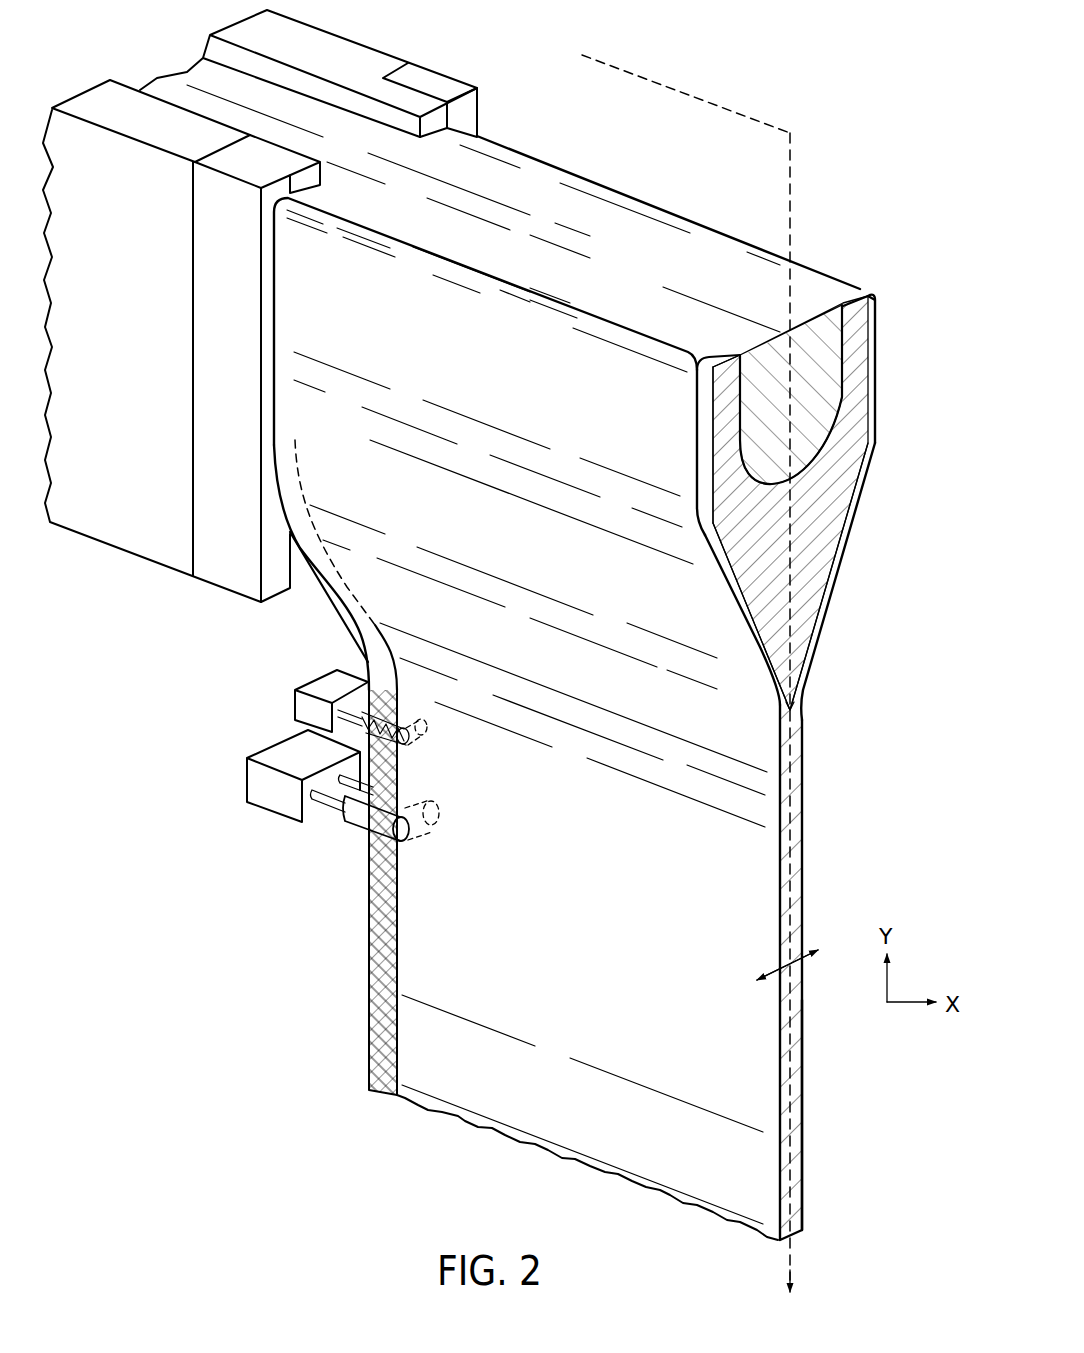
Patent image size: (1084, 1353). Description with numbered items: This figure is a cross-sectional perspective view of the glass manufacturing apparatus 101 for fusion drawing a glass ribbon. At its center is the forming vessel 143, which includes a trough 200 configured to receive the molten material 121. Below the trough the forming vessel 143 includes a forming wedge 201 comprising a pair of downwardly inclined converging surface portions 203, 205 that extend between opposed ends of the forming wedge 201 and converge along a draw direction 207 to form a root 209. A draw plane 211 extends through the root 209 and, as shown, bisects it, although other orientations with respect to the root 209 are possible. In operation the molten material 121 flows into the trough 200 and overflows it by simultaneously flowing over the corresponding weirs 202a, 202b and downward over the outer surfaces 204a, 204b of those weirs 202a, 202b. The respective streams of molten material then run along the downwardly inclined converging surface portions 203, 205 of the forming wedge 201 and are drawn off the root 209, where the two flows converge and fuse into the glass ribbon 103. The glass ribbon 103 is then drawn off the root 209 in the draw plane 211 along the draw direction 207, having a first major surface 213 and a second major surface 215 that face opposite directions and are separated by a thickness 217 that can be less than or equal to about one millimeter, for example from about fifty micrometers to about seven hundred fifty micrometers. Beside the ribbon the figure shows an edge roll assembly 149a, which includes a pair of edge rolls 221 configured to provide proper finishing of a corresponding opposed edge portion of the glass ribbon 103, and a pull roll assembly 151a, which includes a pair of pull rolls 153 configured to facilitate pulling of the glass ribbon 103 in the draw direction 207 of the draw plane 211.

The glass manufacturing apparatus 101 is at (787, 95).
The glass ribbon 103 is at (762, 845).
The molten material 121 is at (827, 363).
The forming vessel 143 is at (845, 207).
The edge roll assembly 149a is at (273, 698).
The pull roll assembly 151a is at (238, 740).
The pull rolls 153 is at (417, 837).
The trough 200 is at (830, 397).
The forming wedge 201 is at (830, 503).
The weir 202a is at (722, 358).
The weir 202b is at (860, 290).
The downwardly inclined converging surface portion 203 is at (762, 648).
The outer surface 204a is at (703, 428).
The outer surface 204b is at (873, 347).
The downwardly inclined converging surface portion 205 is at (822, 625).
The draw direction 207 is at (793, 1270).
The root 209 is at (792, 710).
The draw plane 211 is at (790, 157).
The first major surface 213 is at (778, 1070).
The second major surface 215 is at (803, 1108).
The thickness 217 is at (818, 950).
The edge rolls 221 is at (417, 745).